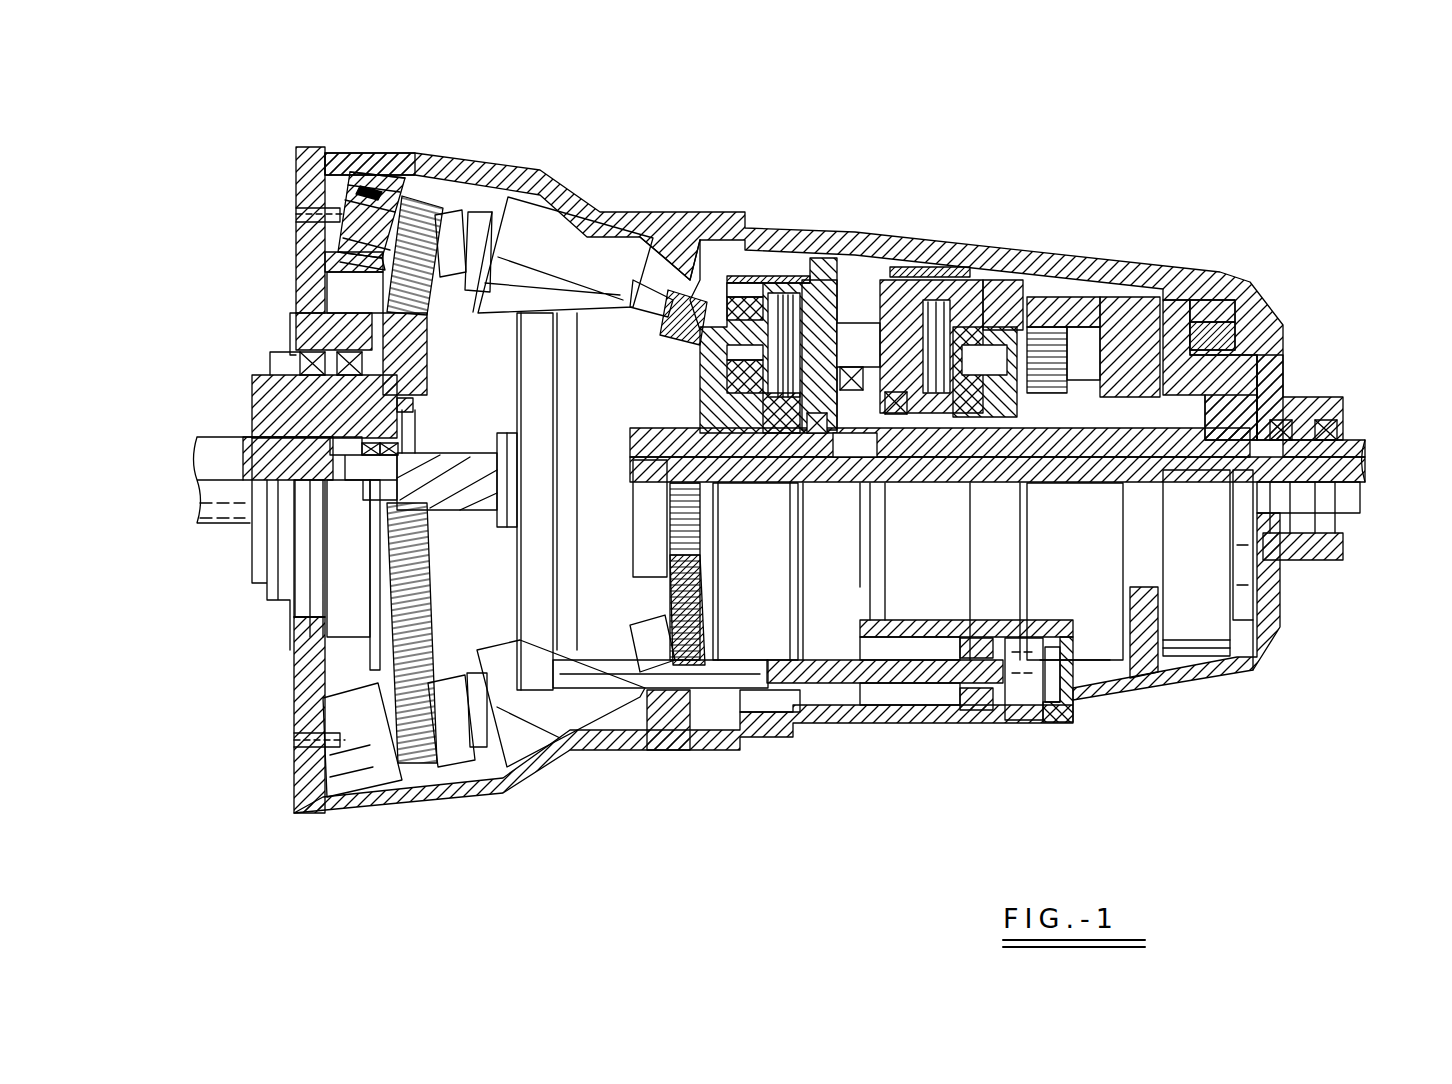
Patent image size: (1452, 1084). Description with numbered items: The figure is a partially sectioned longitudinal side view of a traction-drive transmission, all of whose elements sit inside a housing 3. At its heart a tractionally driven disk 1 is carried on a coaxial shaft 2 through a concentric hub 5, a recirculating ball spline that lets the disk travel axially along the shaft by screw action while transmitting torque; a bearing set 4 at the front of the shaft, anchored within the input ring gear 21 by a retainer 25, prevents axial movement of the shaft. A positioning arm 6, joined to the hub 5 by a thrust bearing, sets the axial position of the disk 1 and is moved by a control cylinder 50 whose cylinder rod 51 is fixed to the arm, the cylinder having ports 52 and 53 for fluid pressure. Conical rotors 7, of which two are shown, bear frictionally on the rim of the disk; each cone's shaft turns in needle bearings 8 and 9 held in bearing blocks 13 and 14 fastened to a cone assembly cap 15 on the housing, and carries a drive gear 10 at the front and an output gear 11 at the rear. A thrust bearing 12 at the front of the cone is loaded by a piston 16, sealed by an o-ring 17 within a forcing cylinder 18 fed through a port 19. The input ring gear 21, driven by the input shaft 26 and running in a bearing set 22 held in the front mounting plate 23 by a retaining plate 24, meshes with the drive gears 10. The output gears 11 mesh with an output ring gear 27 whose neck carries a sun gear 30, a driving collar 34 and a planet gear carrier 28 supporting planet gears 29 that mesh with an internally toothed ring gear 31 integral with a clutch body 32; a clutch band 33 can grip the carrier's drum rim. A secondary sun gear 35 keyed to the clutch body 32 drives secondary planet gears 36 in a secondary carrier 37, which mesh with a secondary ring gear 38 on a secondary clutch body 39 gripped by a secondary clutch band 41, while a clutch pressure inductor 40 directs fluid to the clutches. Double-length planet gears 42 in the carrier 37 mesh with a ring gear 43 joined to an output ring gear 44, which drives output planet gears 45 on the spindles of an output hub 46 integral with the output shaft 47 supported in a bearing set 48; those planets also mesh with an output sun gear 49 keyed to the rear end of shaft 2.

The disk 1 is at (570, 440).
The support coaxial shaft 2 is at (1075, 458).
The housing 3 is at (872, 235).
The bearing set 4 is at (385, 440).
The hub 5 is at (505, 430).
The positioning arm 6 is at (520, 580).
The conical rotor 7 is at (540, 195).
The bearing 8 is at (455, 280).
The bearing 9 is at (633, 327).
The drive gear 10 is at (450, 195).
The output gear 11 is at (700, 245).
The thrust bearing 12 is at (395, 190).
The bearing block 13 is at (500, 185).
The bearing block 14 is at (665, 240).
The cone assembly cap 15 is at (585, 210).
The piston 16 is at (370, 175).
The o-ring 17 is at (375, 180).
The forcing cylinder 18 is at (335, 160).
The port 19 is at (300, 215).
The input ring gear 21 is at (265, 392).
The bearing set 22 is at (328, 356).
The front mounting plate 23 is at (303, 268).
The retaining plate 24 is at (290, 320).
The retainer 25 is at (420, 410).
The input shaft 26 is at (222, 520).
The output ring gear 27 is at (697, 553).
The planet gear carrier 28 is at (722, 330).
The planet gears 29 is at (735, 362).
The sun gear 30 is at (772, 452).
The ring gear 31 is at (762, 275).
The clutch body 32 is at (820, 285).
The clutch band 33 is at (738, 262).
The driving collar 34 is at (740, 458).
The secondary sun gear 35 is at (1045, 448).
The secondary planet gears 36 is at (1008, 300).
The secondary planet gear carrier 37 is at (985, 372).
The secondary ring gear 38 is at (990, 278).
The secondary clutch body 39 is at (897, 278).
The clutch pressure inductor 40 is at (905, 600).
The secondary clutch band 41 is at (950, 265).
The double-length planet gears 42 is at (1065, 320).
The ring gear 43 is at (1080, 297).
The output ring gear 44 is at (1215, 300).
The output planet gears 45 is at (1232, 330).
The output hub 46 is at (1255, 360).
The output shaft 47 is at (1352, 432).
The bearing set 48 is at (1333, 523).
The output sun gear 49 is at (1215, 462).
The control cylinder 50 is at (1068, 718).
The cylinder rod 51 is at (585, 668).
The port 52 is at (833, 720).
The port 53 is at (1037, 720).